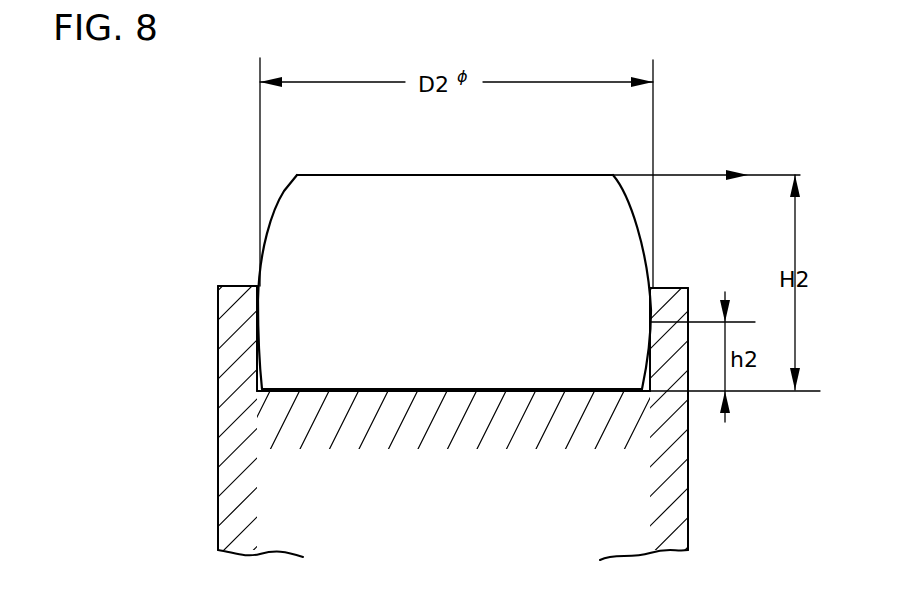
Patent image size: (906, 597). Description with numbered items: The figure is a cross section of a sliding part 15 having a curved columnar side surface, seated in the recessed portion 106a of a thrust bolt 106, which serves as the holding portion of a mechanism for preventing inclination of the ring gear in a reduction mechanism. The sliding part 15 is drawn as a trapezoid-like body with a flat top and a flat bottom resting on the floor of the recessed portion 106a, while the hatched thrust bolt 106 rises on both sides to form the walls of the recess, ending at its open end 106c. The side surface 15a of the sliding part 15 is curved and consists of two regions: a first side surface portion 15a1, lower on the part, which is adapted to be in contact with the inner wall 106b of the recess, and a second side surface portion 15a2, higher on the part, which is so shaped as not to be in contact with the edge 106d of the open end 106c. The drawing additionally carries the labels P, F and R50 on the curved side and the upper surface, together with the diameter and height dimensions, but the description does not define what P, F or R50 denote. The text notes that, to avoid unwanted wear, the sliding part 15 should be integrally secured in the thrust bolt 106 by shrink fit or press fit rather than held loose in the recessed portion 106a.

The sliding part 15 is at (374, 207).
The side surface 15a is at (270, 224).
The first side surface portion 15a1 is at (650, 318).
The second side surface portion 15a2 is at (637, 230).
The thrust bolt 106 is at (453, 350).
The recessed portion 106a is at (570, 391).
The inner wall 106b is at (262, 387).
The open end 106c is at (232, 285).
The edge 106d is at (263, 283).
The contact point P is at (653, 317).
The pressing force F is at (706, 163).
The radius of lens side surface R50 is at (260, 330).